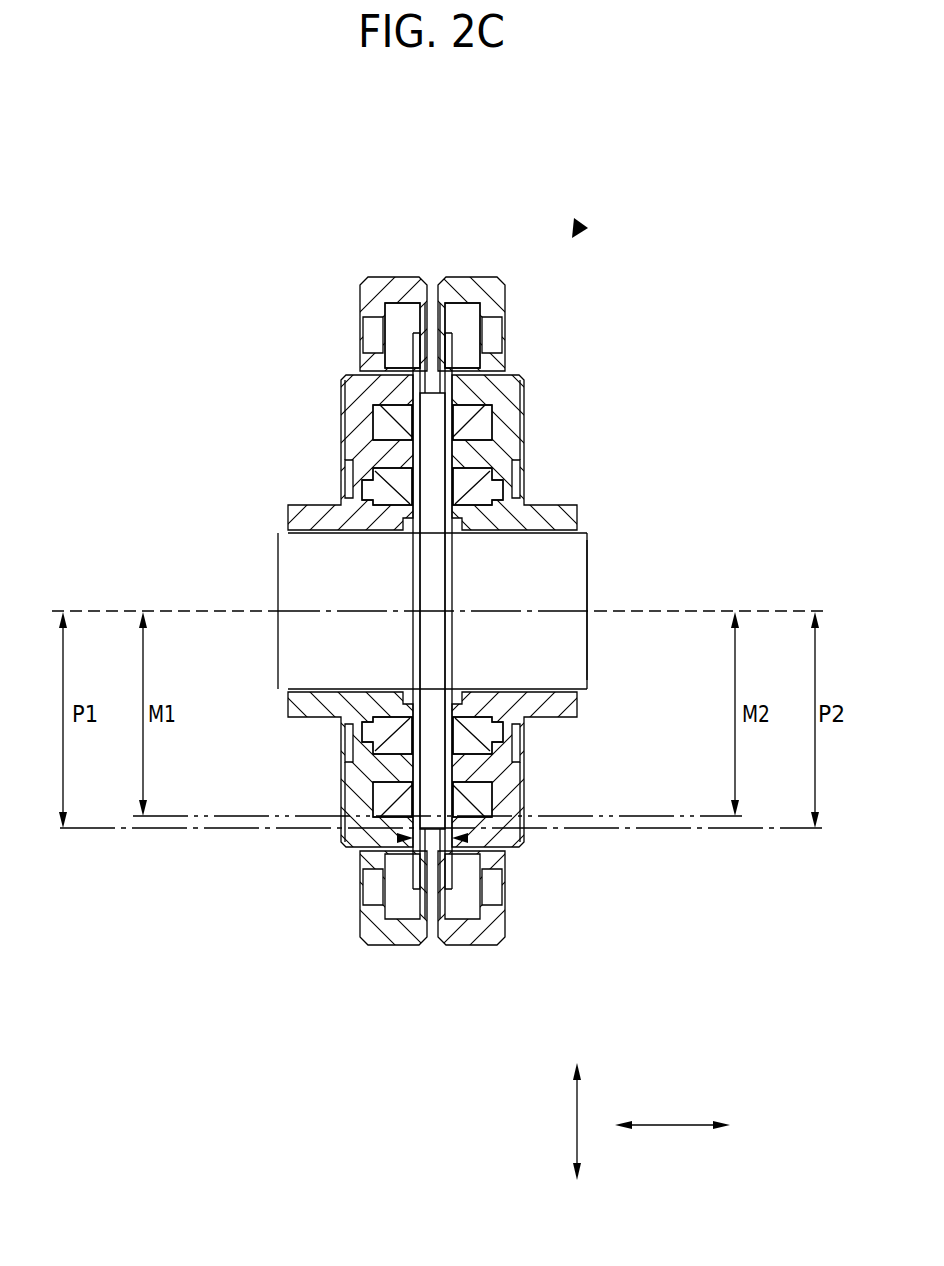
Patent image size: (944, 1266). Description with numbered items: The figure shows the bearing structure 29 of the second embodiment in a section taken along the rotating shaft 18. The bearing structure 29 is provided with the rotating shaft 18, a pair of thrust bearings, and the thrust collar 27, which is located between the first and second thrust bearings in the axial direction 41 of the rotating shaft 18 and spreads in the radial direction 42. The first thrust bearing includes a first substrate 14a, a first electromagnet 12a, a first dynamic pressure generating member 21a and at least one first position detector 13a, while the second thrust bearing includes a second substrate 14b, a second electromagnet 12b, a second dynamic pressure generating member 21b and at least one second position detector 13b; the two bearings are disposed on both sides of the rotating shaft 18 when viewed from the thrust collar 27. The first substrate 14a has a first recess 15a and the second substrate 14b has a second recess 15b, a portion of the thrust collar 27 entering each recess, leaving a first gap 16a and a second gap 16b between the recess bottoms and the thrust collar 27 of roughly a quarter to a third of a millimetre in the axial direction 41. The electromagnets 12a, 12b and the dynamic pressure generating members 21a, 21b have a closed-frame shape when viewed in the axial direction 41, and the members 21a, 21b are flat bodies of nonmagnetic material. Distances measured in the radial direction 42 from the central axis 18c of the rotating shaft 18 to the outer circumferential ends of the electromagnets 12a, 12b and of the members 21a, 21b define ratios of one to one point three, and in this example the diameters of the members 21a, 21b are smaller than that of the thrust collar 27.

The bearing structure 29 is at (580, 222).
The first substrate 14a is at (388, 285).
The second substrate 14b is at (475, 285).
The first dynamic pressure generating member 21a is at (400, 372).
The second dynamic pressure generating member 21b is at (455, 377).
The first electromagnet 12a is at (392, 410).
The second electromagnet 12b is at (470, 417).
The first position detector 13a is at (388, 493).
The second position detector 13b is at (483, 493).
The thrust collar 27 is at (435, 566).
The rotating shaft 18 is at (325, 655).
The central axis 18c is at (581, 640).
The first gap 16a is at (400, 838).
The second gap 16b is at (465, 838).
The first recess 15a is at (425, 863).
The second recess 15b is at (440, 863).
The axial direction 41 is at (672, 1125).
The radial direction 42 is at (576, 1122).